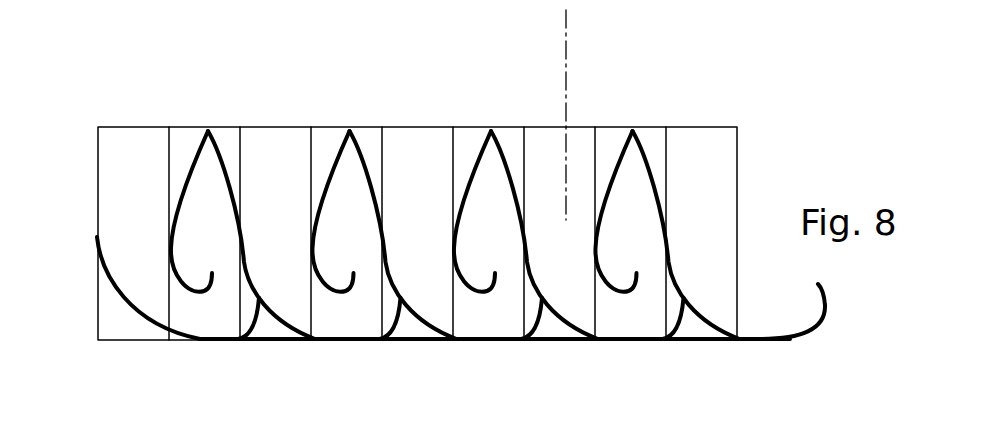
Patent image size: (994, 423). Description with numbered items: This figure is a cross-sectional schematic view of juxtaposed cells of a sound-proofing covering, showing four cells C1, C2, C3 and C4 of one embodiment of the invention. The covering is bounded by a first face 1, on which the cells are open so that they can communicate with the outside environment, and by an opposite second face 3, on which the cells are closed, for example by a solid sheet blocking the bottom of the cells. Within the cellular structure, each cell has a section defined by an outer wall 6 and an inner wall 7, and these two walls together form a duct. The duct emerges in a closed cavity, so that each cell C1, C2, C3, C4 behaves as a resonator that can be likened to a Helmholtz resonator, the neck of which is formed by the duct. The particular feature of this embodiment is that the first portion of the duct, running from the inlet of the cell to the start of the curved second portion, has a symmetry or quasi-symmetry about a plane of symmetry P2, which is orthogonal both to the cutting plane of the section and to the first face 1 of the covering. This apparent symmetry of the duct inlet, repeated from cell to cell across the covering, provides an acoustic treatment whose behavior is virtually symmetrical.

The first face 1 is at (149, 119).
The second face 3 is at (683, 349).
The outer wall 6 is at (110, 285).
The inner wall 7 is at (190, 173).
The cell C1 is at (150, 310).
The cell C2 is at (342, 310).
The cell C3 is at (487, 322).
The cell C4 is at (615, 322).
The plane of symmetry P2 is at (588, 115).